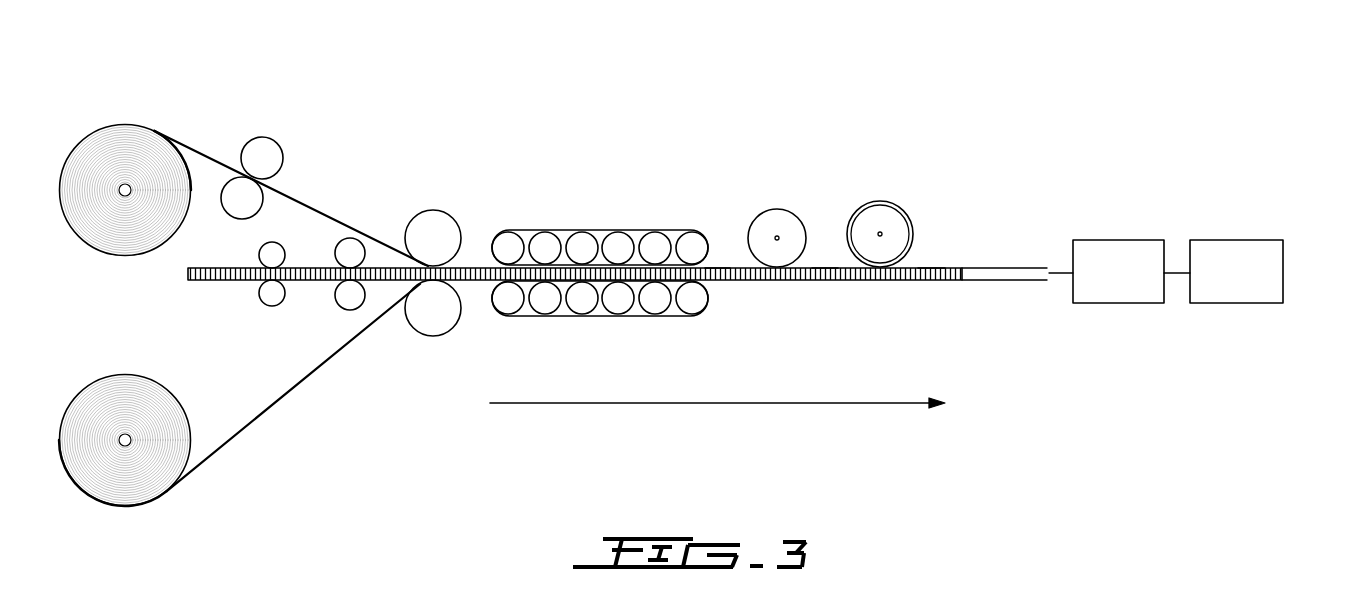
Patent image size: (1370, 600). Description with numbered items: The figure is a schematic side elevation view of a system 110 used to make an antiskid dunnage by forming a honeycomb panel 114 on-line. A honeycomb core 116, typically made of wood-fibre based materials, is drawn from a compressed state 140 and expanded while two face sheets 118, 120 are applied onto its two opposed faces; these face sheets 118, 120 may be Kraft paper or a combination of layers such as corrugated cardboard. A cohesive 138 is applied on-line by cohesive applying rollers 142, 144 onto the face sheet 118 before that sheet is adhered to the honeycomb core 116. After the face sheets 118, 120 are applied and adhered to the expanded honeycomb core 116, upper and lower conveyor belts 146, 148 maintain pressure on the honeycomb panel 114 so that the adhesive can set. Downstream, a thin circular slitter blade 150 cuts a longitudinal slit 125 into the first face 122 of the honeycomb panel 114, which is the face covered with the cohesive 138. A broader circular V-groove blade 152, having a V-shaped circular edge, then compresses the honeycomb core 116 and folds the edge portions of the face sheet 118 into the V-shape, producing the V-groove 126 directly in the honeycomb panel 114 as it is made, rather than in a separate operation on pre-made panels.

The system 110 is at (1238, 123).
The honeycomb panel 114 is at (952, 268).
The honeycomb core 116 is at (308, 275).
The face sheet 118 is at (300, 203).
The face sheet 120 is at (290, 390).
The first face 122 is at (717, 268).
The longitudinal slit 125 is at (825, 266).
The V-groove 126 is at (930, 266).
The cohesive 138 is at (355, 227).
The compressed state 140 is at (213, 282).
The cohesive applying roller 142 is at (265, 141).
The cohesive applying roller 144 is at (243, 200).
The conveyor belt 146 is at (598, 230).
The conveyor belt 148 is at (598, 316).
The circular slitter blade 150 is at (776, 209).
The V-groove blade 152 is at (879, 201).